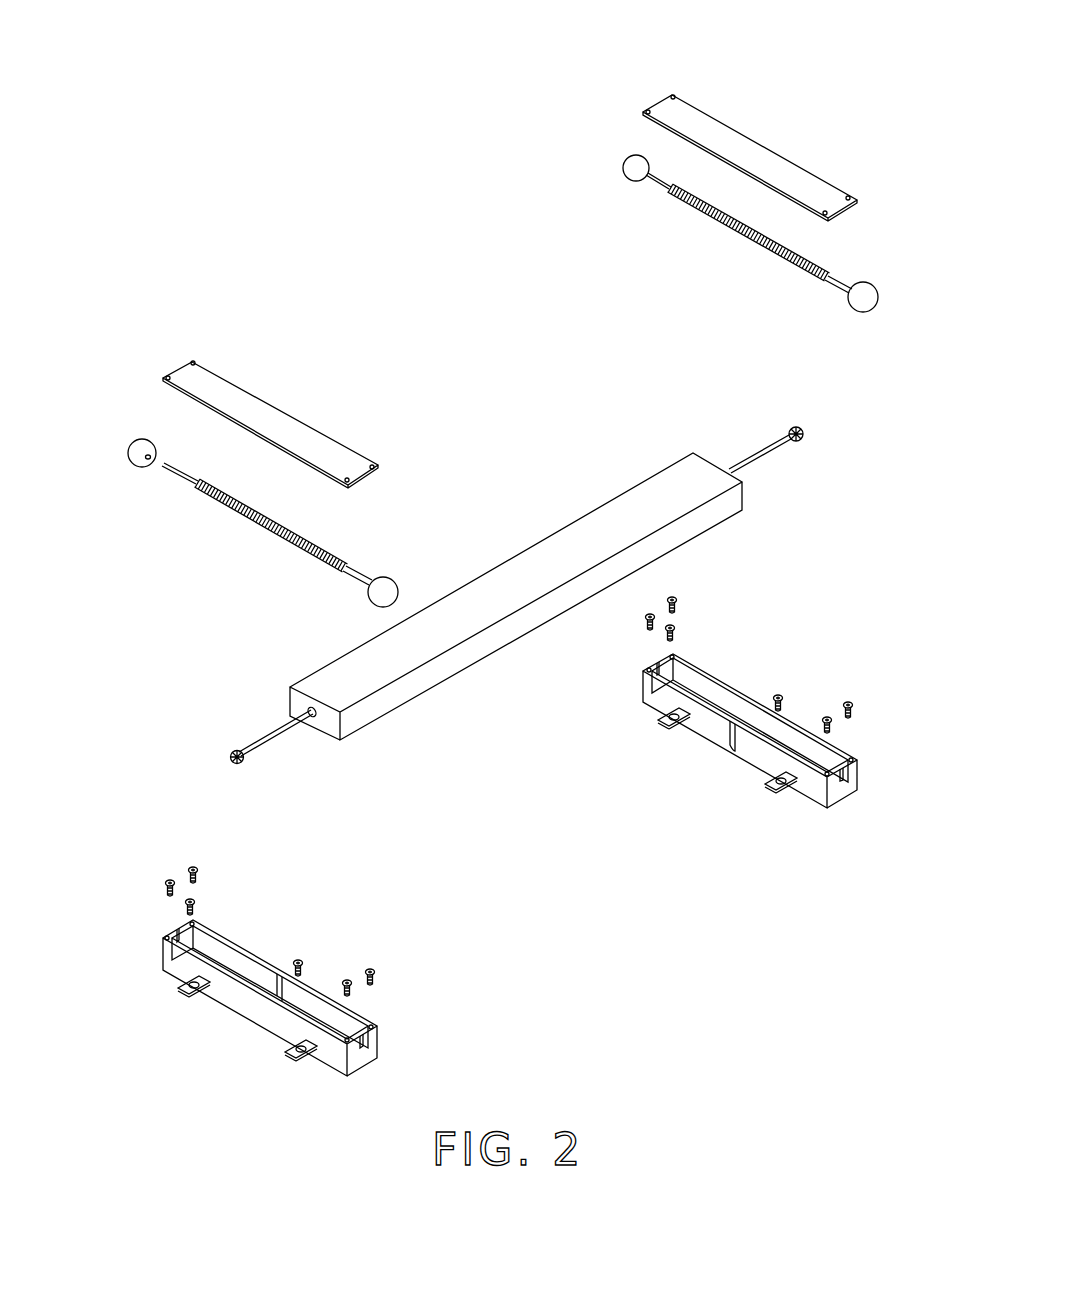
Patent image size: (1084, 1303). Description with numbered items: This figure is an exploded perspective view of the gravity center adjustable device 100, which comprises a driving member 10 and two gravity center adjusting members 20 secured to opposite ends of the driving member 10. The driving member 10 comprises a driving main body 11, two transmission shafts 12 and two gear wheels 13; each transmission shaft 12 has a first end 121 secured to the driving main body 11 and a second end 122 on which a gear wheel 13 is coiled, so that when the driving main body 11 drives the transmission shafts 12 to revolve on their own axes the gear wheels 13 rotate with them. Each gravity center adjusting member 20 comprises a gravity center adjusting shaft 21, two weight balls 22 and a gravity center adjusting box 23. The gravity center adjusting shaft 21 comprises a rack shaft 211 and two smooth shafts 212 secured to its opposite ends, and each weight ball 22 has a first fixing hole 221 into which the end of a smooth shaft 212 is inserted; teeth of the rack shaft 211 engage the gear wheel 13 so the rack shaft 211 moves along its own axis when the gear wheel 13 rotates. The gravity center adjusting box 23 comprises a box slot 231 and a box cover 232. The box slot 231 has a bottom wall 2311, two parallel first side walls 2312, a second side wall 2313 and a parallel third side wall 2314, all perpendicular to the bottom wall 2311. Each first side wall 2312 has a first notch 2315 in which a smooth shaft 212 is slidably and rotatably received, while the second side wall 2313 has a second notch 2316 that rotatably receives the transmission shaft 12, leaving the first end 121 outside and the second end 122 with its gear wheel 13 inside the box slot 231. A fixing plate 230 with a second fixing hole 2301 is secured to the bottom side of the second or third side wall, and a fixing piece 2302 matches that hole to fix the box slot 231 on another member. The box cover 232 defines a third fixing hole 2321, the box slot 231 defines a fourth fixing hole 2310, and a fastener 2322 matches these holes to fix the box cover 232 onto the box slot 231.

The gravity center adjustable device 100 is at (520, 51).
The driving member 10 is at (477, 755).
The driving main body 11 is at (367, 683).
The transmission shaft 12 is at (272, 740).
The gear wheel 13 is at (216, 768).
The first end 121 is at (303, 712).
The second end 122 is at (227, 757).
The gravity center adjusting member 20 is at (643, 377).
The gravity center adjusting shaft 21 is at (630, 268).
The rack shaft 211 is at (722, 218).
The smooth shaft 212 is at (662, 188).
The weight ball 22 is at (578, 172).
The first fixing hole 221 is at (645, 158).
The gravity center adjusting box 23 is at (671, 303).
The box slot 231 is at (752, 604).
The box cover 232 is at (810, 197).
The bottom wall 2311 is at (843, 803).
The first side wall 2312 is at (848, 787).
The second side wall 2313 is at (712, 723).
The second notch 2316 is at (730, 735).
The fixing plate 230 is at (307, 985).
The second fixing hole 2301 is at (300, 1055).
The fixing piece 2302 is at (302, 960).
The fourth fixing hole 2310 is at (195, 923).
The third side wall 2314 is at (238, 1003).
The first notch 2315 is at (365, 1038).
The third fixing hole 2321 is at (197, 363).
The fastener 2322 is at (198, 864).